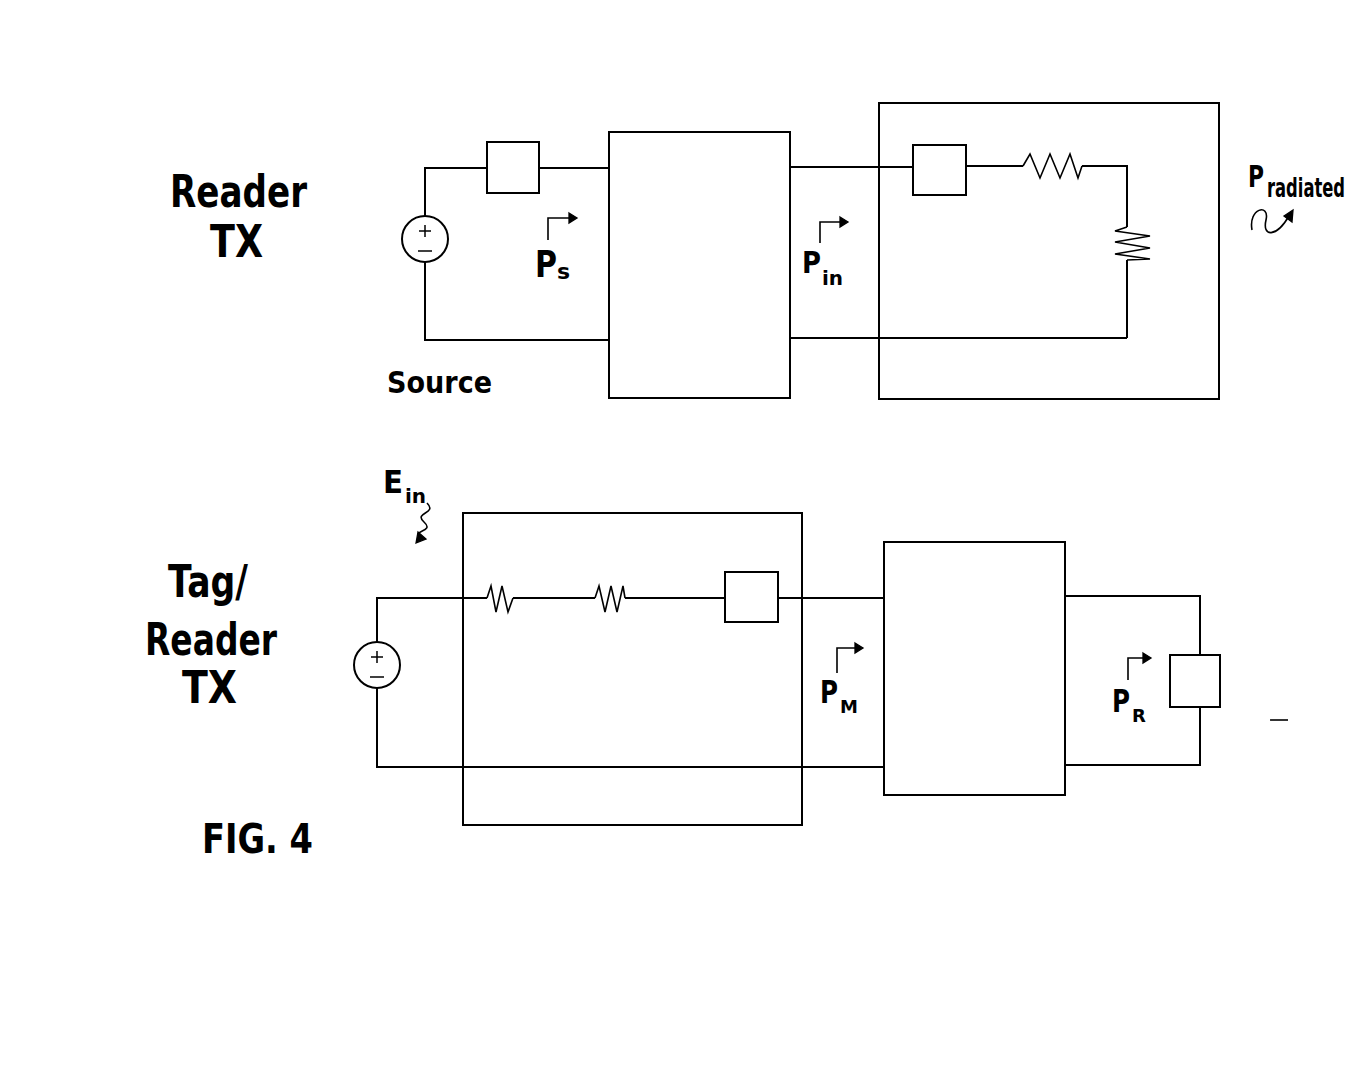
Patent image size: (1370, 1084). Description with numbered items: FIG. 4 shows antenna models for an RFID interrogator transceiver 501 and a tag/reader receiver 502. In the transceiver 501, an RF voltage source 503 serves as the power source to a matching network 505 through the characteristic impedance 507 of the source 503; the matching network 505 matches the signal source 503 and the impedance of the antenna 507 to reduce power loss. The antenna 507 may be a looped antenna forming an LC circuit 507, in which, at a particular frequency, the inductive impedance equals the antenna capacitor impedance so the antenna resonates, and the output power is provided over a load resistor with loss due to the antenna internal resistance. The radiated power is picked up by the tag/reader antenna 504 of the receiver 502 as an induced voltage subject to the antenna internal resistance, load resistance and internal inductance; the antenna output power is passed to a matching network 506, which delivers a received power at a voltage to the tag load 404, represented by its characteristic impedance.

The RFID interrogator transceiver 501 is at (352, 121).
The tag/reader receiver 502 is at (333, 546).
The RF voltage source 503 is at (408, 254).
The antenna 504 is at (677, 513).
The matching network 505 is at (683, 399).
The matching network 506 is at (1020, 541).
The characteristic impedance / antenna 507 is at (540, 160).
The load 404 is at (1264, 576).